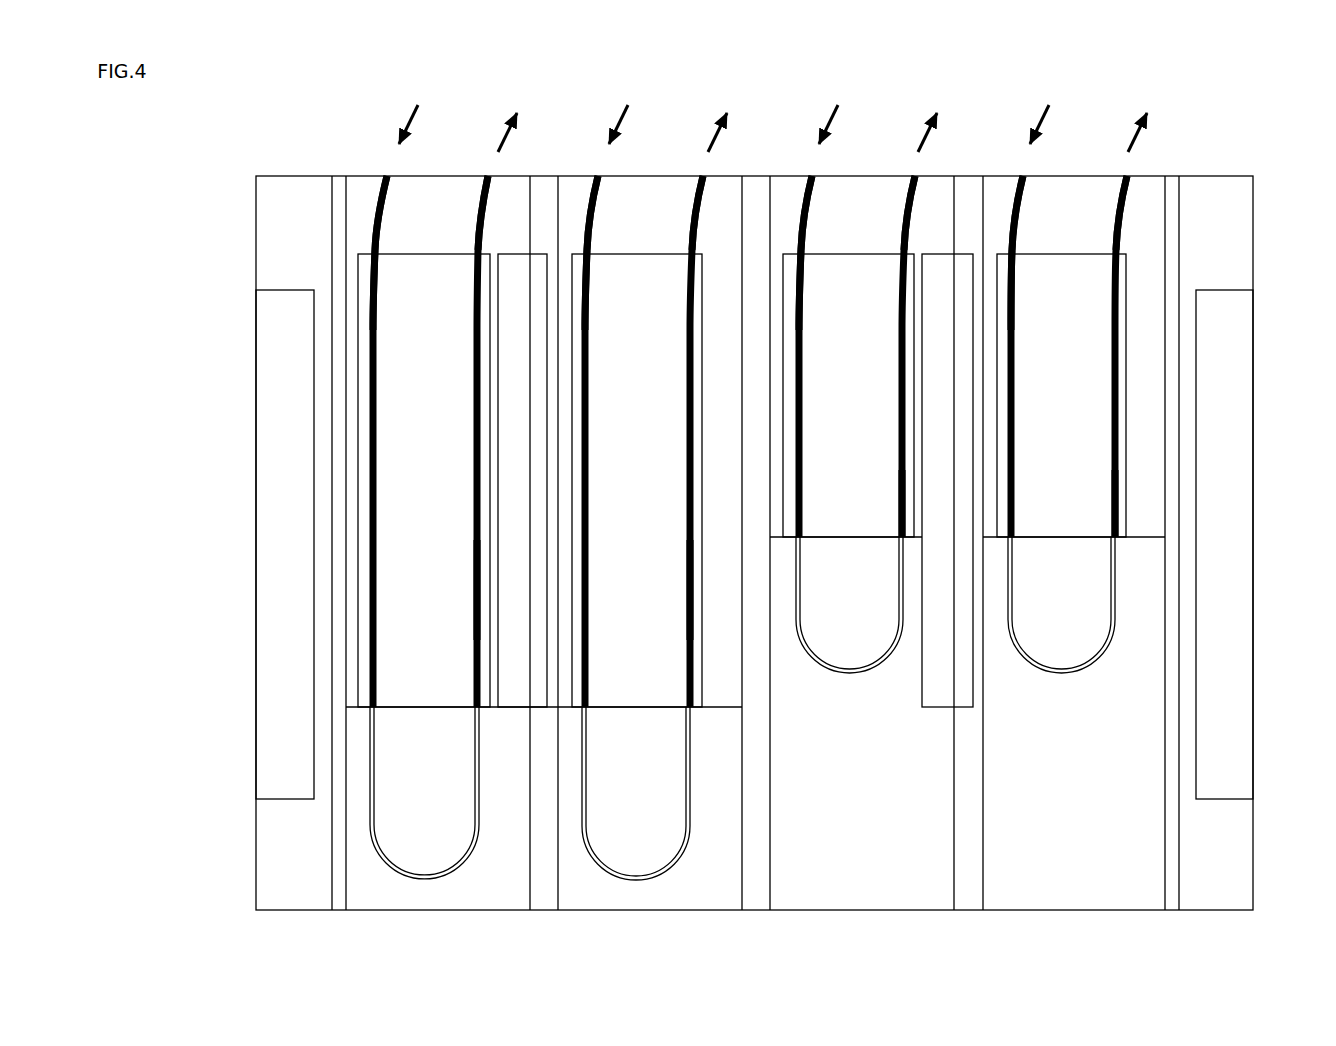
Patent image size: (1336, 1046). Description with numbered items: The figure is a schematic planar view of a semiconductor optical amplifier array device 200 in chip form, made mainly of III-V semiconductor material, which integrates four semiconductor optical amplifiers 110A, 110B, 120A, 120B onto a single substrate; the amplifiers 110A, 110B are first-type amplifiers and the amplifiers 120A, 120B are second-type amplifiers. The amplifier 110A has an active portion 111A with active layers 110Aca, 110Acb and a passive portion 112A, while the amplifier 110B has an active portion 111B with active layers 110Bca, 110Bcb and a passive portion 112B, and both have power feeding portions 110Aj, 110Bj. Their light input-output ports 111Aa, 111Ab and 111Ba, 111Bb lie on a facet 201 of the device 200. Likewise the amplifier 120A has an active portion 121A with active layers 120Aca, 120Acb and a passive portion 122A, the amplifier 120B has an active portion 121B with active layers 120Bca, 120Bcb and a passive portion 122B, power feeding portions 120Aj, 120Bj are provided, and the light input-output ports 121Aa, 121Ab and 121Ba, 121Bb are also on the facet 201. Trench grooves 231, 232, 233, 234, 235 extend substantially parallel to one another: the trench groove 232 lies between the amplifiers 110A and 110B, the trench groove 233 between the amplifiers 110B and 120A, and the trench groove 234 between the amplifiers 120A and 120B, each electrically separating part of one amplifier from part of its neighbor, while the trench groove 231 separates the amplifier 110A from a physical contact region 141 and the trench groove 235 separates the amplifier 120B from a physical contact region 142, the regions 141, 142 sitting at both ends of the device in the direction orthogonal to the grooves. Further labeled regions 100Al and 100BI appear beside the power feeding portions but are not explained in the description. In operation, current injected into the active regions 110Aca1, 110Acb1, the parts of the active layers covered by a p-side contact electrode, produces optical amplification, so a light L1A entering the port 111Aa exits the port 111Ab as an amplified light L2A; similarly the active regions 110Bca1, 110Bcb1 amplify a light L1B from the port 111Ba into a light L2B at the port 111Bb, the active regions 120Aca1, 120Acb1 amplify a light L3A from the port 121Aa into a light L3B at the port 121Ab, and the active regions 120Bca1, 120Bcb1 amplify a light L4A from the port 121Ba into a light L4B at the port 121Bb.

The semiconductor optical amplifier array device 200 is at (1266, 154).
The facet 201 is at (273, 176).
The physical contact region 141 is at (268, 507).
The physical contact region 142 is at (1233, 508).
The trench groove 231 is at (340, 885).
The trench groove 232 is at (545, 885).
The trench groove 233 is at (758, 885).
The trench groove 234 is at (968, 885).
The trench groove 235 is at (1172, 885).
The active portion 111A is at (361, 198).
The light input-output port 111Aa is at (388, 177).
The light input-output port 111Ab is at (490, 176).
The active portion 111B is at (643, 203).
The light input-output port 111Ba is at (598, 176).
The light input-output port 111Bb is at (703, 176).
The active portion 121A is at (855, 205).
The light input-output port 121Aa is at (812, 176).
The light input-output port 121Ab is at (915, 176).
The active portion 121B is at (1067, 205).
The light input-output port 121Ba is at (1023, 176).
The light input-output port 121Bb is at (1127, 176).
The active layer 110Aca is at (381, 398).
The active region 110Aca1 is at (378, 288).
The active layer 110Acb is at (471, 490).
The active region 110Acb1 is at (475, 590).
The power feeding portion 110Aj is at (428, 700).
The groove A 100Al is at (512, 700).
The active layer 110Bca is at (593, 398).
The active region 110Bca1 is at (590, 288).
The active layer 110Bcb is at (684, 490).
The active region 110Bcb1 is at (688, 590).
The power feeding portion 110Bj is at (636, 700).
The active layer 120Aca is at (807, 388).
The active region 120Aca1 is at (804, 288).
The active layer 120Acb is at (896, 455).
The active region 120Acb1 is at (899, 510).
The power feeding portion 120Aj is at (848, 530).
The groove B 100BI is at (937, 700).
The active layer 120Bca is at (1019, 388).
The active region 120Bca1 is at (1016, 288).
The active layer 120Bcb is at (1109, 455).
The active region 120Bcb1 is at (1111, 510).
The power feeding portion 120Bj is at (1060, 530).
The semiconductor optical amplifier 110A is at (467, 874).
The passive portion 112A is at (425, 880).
The semiconductor optical amplifier 110B is at (680, 874).
The passive portion 112B is at (637, 881).
The semiconductor optical amplifier 120A is at (862, 694).
The passive portion 122A is at (825, 673).
The semiconductor optical amplifier 120B is at (1077, 694).
The passive portion 122B is at (1038, 673).
The light L1A is at (399, 118).
The light L2A is at (503, 120).
The light L1B is at (609, 118).
The light L2B is at (715, 120).
The light L3A is at (819, 118).
The light L3B is at (923, 120).
The light L4A is at (1030, 118).
The light L4B is at (1133, 120).